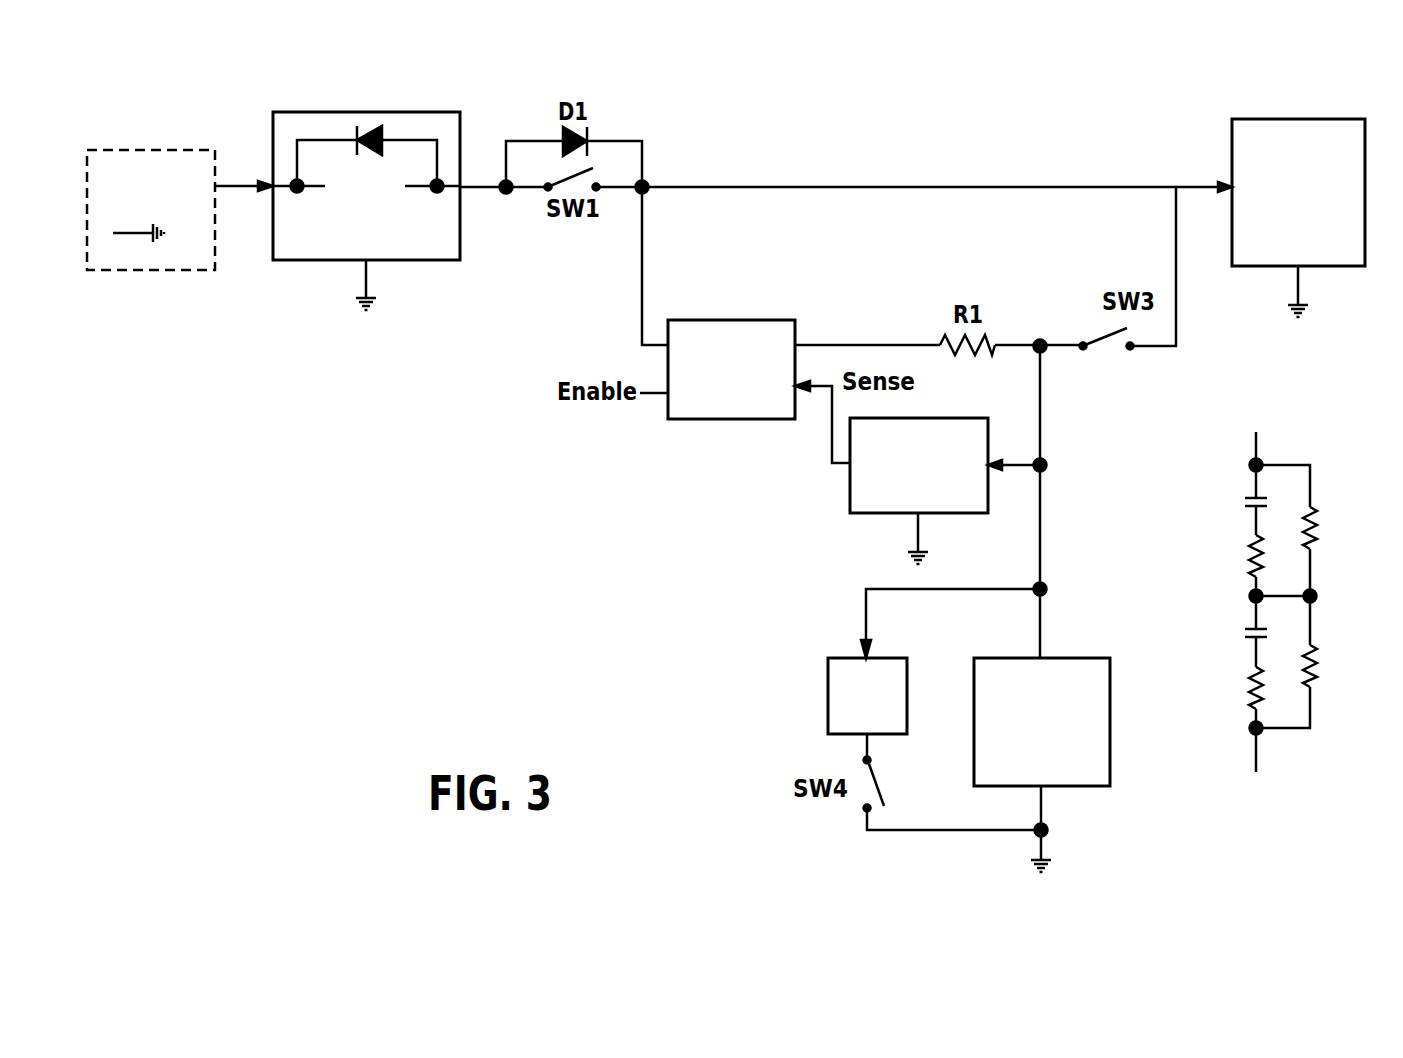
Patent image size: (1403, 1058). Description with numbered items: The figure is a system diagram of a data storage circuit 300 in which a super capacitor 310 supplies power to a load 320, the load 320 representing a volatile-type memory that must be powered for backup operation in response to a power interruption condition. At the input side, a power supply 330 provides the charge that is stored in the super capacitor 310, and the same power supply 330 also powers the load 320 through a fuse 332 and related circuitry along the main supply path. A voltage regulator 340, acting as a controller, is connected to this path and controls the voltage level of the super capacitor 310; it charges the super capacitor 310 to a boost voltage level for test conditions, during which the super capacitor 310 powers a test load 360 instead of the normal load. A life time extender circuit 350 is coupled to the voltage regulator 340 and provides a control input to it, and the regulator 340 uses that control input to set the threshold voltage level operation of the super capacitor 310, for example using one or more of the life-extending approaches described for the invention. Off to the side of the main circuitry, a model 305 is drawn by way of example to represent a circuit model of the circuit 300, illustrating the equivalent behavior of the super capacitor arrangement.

The data storage circuit 300 is at (1092, 116).
The model 305 is at (1244, 792).
The super capacitor 310 is at (1110, 698).
The load 320 is at (1268, 119).
The power supply 330 is at (137, 150).
The fuse 332 is at (383, 112).
The voltage regulator 340 is at (717, 320).
The life time extender circuit 350 is at (932, 418).
The test load 360 is at (880, 658).